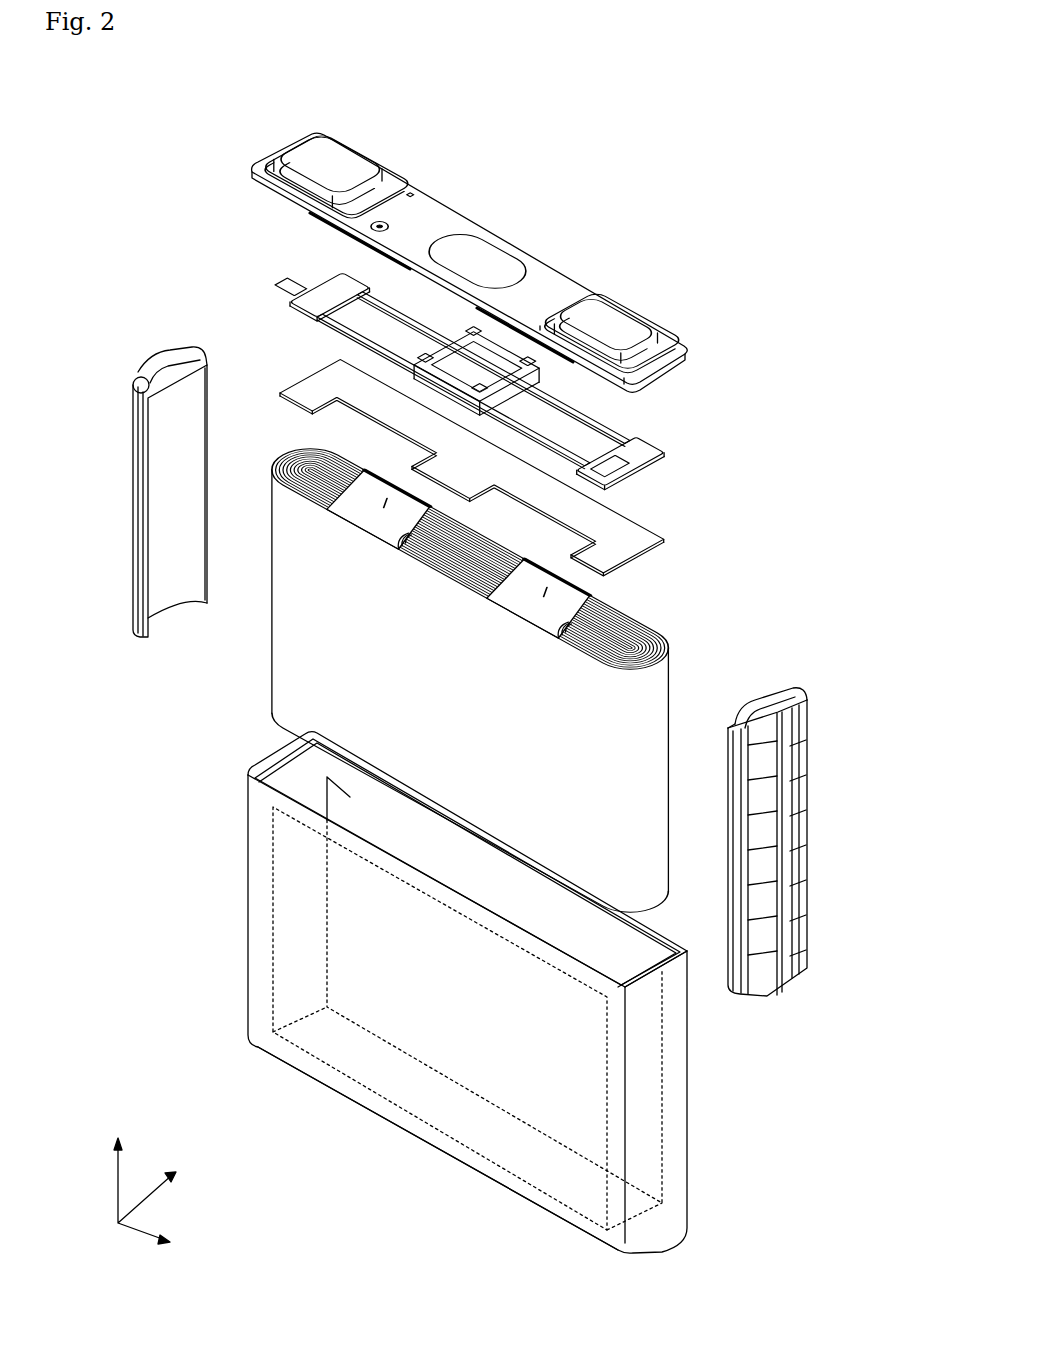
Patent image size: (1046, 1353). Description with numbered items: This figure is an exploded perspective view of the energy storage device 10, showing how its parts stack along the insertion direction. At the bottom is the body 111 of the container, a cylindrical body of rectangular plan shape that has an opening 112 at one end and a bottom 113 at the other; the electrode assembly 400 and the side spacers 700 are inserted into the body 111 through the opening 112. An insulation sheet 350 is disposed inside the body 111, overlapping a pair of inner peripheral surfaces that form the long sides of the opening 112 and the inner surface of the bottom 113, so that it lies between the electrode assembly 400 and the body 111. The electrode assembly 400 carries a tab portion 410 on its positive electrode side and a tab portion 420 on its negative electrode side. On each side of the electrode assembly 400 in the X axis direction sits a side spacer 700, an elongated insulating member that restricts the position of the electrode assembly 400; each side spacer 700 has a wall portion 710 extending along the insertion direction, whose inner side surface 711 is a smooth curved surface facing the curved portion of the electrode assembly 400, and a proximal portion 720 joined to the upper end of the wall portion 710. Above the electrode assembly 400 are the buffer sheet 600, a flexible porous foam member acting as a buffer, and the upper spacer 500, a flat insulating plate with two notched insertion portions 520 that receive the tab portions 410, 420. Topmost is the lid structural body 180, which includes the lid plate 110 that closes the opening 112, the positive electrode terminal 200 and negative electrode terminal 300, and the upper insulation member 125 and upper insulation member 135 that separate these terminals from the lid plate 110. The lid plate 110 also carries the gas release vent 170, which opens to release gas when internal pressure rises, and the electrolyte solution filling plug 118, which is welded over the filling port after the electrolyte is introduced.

The energy storage device 10 is at (722, 140).
The lid plate 110 is at (672, 340).
The body 111 is at (248, 890).
The opening 112 is at (658, 920).
The bottom 113 is at (505, 1198).
The electrolyte solution filling plug 118 is at (387, 222).
The upper insulation member 125 is at (383, 187).
The upper insulation member 135 is at (583, 293).
The gas release vent 170 is at (470, 262).
The lid structural body 180 is at (692, 302).
The positive electrode terminal 200 is at (330, 158).
The negative electrode terminal 300 is at (612, 317).
The insulation sheet 350 is at (350, 800).
The electrode assembly 400 is at (653, 680).
The tab portion 410 is at (383, 497).
The tab portion 420 is at (587, 593).
The upper spacer 500 is at (600, 433).
The insertion portion 520 is at (340, 333).
The buffer sheet 600 is at (620, 530).
The side spacer 700 is at (150, 337).
The wall portion 710 is at (130, 415).
The inner side surface 711 is at (167, 597).
The proximal portion 720 is at (202, 360).